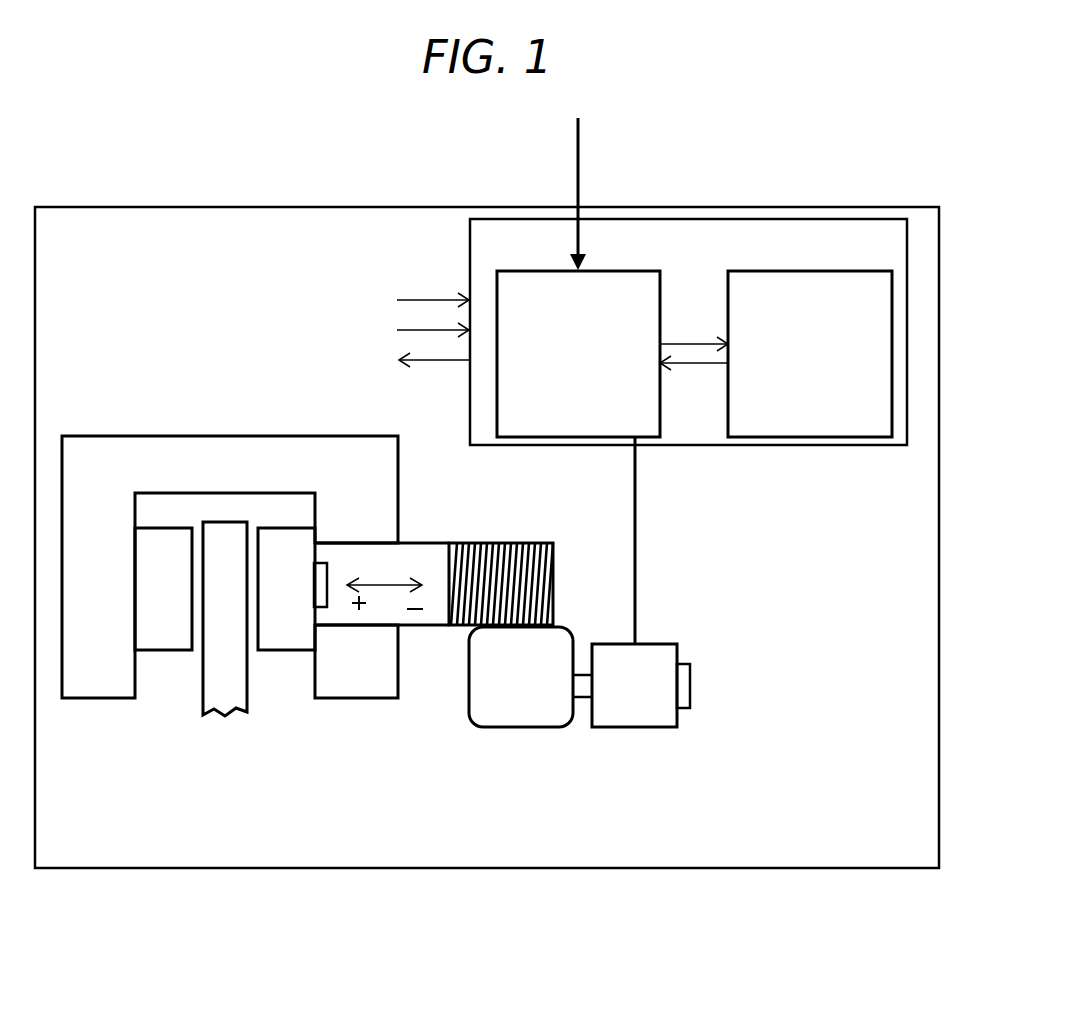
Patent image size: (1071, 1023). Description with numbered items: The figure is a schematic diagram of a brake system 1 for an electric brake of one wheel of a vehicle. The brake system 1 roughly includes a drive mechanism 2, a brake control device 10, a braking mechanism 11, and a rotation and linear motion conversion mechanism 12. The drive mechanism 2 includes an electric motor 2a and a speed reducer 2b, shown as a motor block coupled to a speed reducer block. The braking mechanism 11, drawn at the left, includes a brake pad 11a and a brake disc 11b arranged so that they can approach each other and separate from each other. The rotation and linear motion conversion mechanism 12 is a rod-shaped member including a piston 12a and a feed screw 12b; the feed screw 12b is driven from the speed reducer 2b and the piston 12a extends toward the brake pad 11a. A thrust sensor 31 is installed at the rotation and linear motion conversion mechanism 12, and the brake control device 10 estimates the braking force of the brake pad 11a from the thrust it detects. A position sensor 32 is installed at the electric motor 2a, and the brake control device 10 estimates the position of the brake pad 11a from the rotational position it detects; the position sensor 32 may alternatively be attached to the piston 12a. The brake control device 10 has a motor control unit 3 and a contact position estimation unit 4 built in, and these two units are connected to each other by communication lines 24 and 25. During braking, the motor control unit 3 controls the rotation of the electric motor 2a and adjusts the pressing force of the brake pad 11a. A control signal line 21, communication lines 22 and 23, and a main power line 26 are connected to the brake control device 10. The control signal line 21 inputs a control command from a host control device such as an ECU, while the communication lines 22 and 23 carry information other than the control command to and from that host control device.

The brake system 1 is at (197, 152).
The brake control device 10 is at (850, 219).
The motor control unit 3 is at (590, 437).
The contact position estimation unit 4 is at (808, 437).
The main power line 26 is at (580, 148).
The control signal line 21 is at (417, 300).
The communication line 22 is at (417, 331).
The communication line 23 is at (417, 361).
The communication line 24 is at (683, 340).
The communication line 25 is at (700, 366).
The braking mechanism 11 is at (312, 395).
The brake pad 11a is at (288, 528).
The brake disc 11b is at (225, 522).
The rotation and linear motion conversion mechanism 12 is at (434, 539).
The piston 12a is at (420, 543).
The feed screw 12b is at (501, 561).
The drive mechanism 2 is at (573, 642).
The electric motor 2a is at (634, 617).
The speed reducer 2b is at (531, 728).
The thrust sensor 31 is at (328, 575).
The position sensor 32 is at (690, 683).